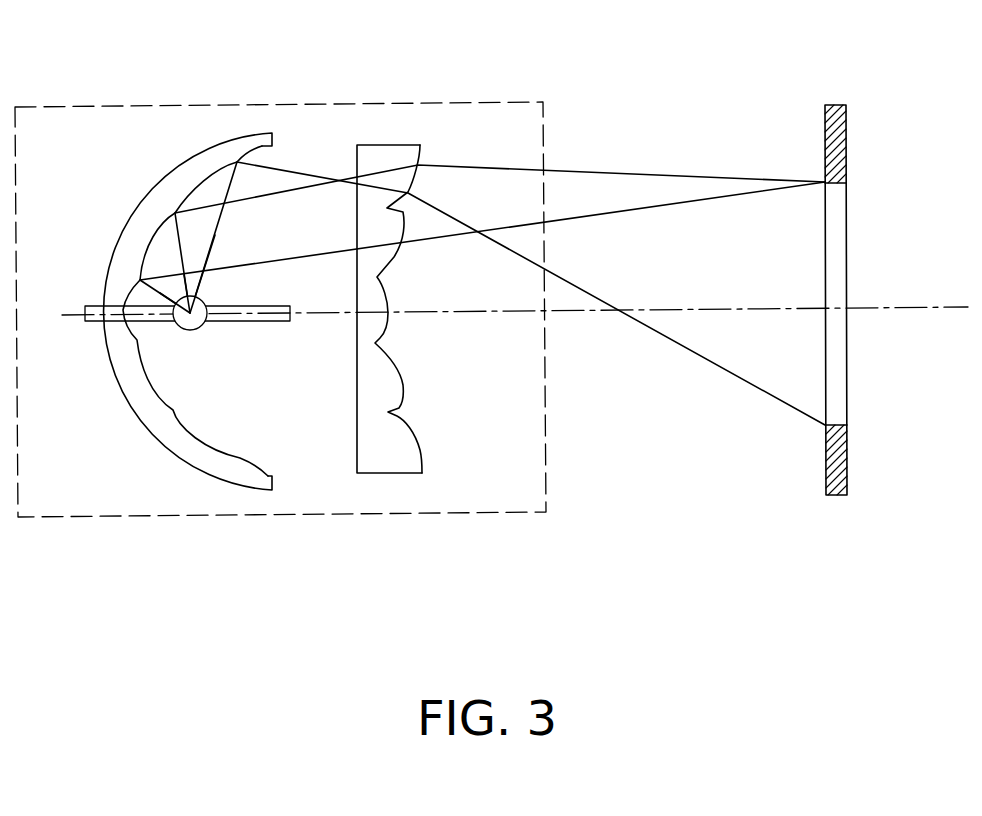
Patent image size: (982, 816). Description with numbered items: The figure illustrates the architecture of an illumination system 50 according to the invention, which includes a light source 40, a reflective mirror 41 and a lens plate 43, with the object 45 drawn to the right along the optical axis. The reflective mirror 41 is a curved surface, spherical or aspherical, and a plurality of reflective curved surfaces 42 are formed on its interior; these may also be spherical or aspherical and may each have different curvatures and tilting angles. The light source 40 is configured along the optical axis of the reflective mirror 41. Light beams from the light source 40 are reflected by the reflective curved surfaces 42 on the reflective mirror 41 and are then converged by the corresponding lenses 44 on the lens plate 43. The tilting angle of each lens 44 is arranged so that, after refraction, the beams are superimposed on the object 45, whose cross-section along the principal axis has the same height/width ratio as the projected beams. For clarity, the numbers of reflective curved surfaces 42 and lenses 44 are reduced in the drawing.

The light source 40 is at (188, 330).
The reflective mirror 41 is at (132, 397).
The reflective curved surfaces 42 is at (185, 433).
The lens plate 43 is at (367, 427).
The lenses 44 is at (422, 452).
The object 45 is at (848, 477).
The illumination system 50 is at (435, 102).